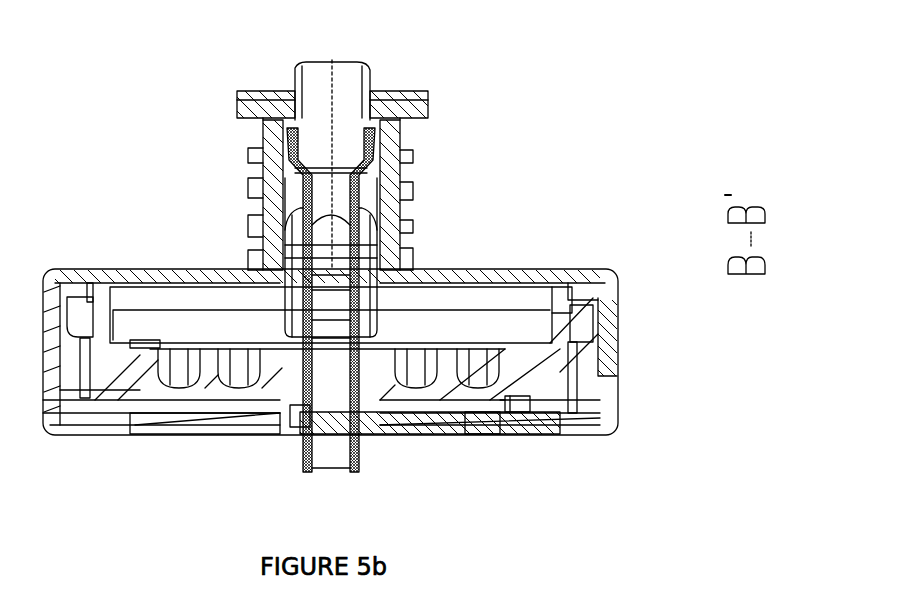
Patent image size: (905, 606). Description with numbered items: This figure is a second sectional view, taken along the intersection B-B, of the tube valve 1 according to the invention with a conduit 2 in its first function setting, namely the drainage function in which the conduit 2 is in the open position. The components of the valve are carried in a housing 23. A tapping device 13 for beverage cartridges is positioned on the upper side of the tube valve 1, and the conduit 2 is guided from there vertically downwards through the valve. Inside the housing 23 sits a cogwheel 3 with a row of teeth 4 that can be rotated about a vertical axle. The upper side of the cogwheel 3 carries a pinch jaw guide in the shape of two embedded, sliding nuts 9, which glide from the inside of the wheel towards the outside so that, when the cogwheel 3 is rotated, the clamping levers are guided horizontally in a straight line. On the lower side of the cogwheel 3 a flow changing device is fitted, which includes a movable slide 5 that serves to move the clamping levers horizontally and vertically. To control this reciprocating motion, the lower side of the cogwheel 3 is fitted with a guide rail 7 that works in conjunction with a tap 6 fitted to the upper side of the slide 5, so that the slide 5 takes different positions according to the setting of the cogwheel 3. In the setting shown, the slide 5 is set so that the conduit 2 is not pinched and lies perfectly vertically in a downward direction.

The tube valve 1 is at (508, 119).
The conduit 2 is at (362, 247).
The cogwheel 3 is at (128, 375).
The row of teeth 4 is at (77, 327).
The slide 5 is at (427, 427).
The tap 6 is at (549, 453).
The guide rail 7 is at (520, 397).
The sliding nuts 9 is at (177, 377).
The tapping device 13 is at (318, 80).
The housing 23 is at (598, 295).